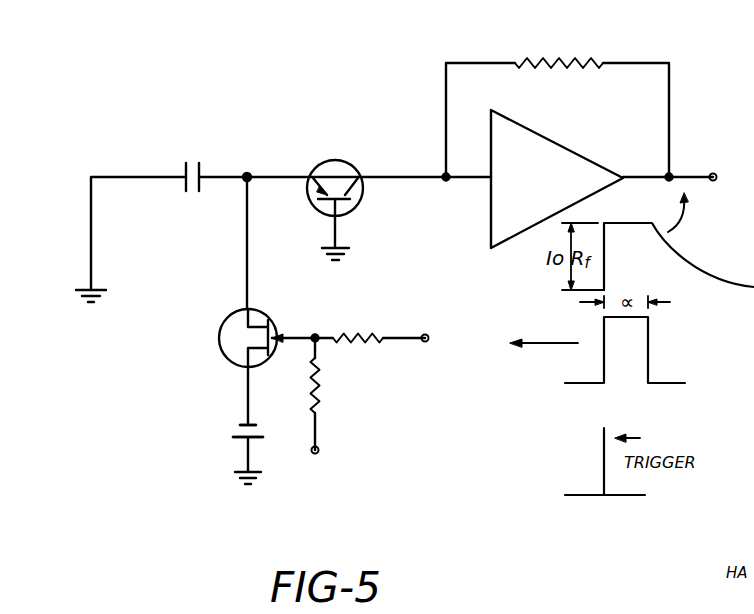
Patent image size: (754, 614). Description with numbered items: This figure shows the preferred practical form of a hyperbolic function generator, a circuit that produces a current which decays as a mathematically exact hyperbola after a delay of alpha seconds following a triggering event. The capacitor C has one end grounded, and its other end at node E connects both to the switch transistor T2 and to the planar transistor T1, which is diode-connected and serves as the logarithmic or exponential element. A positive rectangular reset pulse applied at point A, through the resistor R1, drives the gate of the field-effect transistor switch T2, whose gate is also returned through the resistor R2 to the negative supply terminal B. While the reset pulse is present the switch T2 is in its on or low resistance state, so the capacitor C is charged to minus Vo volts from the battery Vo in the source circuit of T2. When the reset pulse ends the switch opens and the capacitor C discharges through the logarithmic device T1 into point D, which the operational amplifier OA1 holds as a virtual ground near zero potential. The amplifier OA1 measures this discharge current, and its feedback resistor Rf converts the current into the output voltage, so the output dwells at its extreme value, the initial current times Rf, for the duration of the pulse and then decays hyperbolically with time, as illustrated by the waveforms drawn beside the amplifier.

The capacitor C is at (190, 164).
The node E is at (247, 170).
The planar transistor T1 is at (335, 195).
The point D is at (444, 195).
The feedback resistor Rf is at (559, 47).
The operational amplifier OA1 is at (557, 179).
The field-effect transistor switch T2 is at (237, 338).
The resistor R1 is at (358, 321).
The point A is at (420, 353).
The resistor R2 is at (335, 385).
The negative supply terminal - B is at (310, 466).
The voltage Vo is at (224, 434).